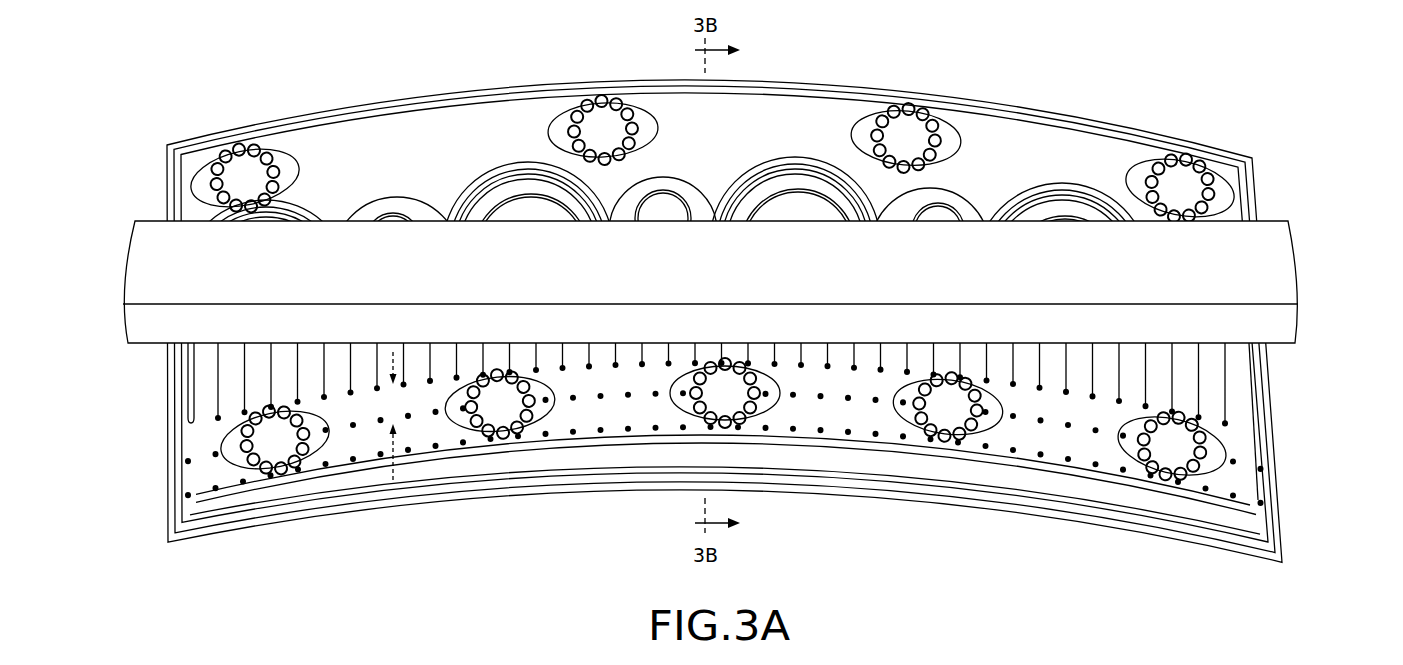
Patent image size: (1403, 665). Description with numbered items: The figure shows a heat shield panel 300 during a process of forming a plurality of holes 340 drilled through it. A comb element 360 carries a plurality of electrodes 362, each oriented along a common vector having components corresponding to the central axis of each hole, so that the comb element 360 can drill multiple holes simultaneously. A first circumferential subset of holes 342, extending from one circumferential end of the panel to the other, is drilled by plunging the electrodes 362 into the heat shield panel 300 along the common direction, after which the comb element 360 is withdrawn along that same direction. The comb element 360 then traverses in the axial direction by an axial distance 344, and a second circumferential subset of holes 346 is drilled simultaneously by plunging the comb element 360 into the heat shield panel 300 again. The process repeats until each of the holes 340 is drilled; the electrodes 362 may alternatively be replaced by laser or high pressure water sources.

The heat shield panel 300 is at (176, 555).
The holes 340 is at (879, 405).
The first circumferential subset of holes 342 is at (188, 461).
The axial distance 344 is at (396, 478).
The second circumferential subset of holes 346 is at (194, 424).
The comb element 360 is at (1278, 236).
The electrodes 362 is at (1228, 355).